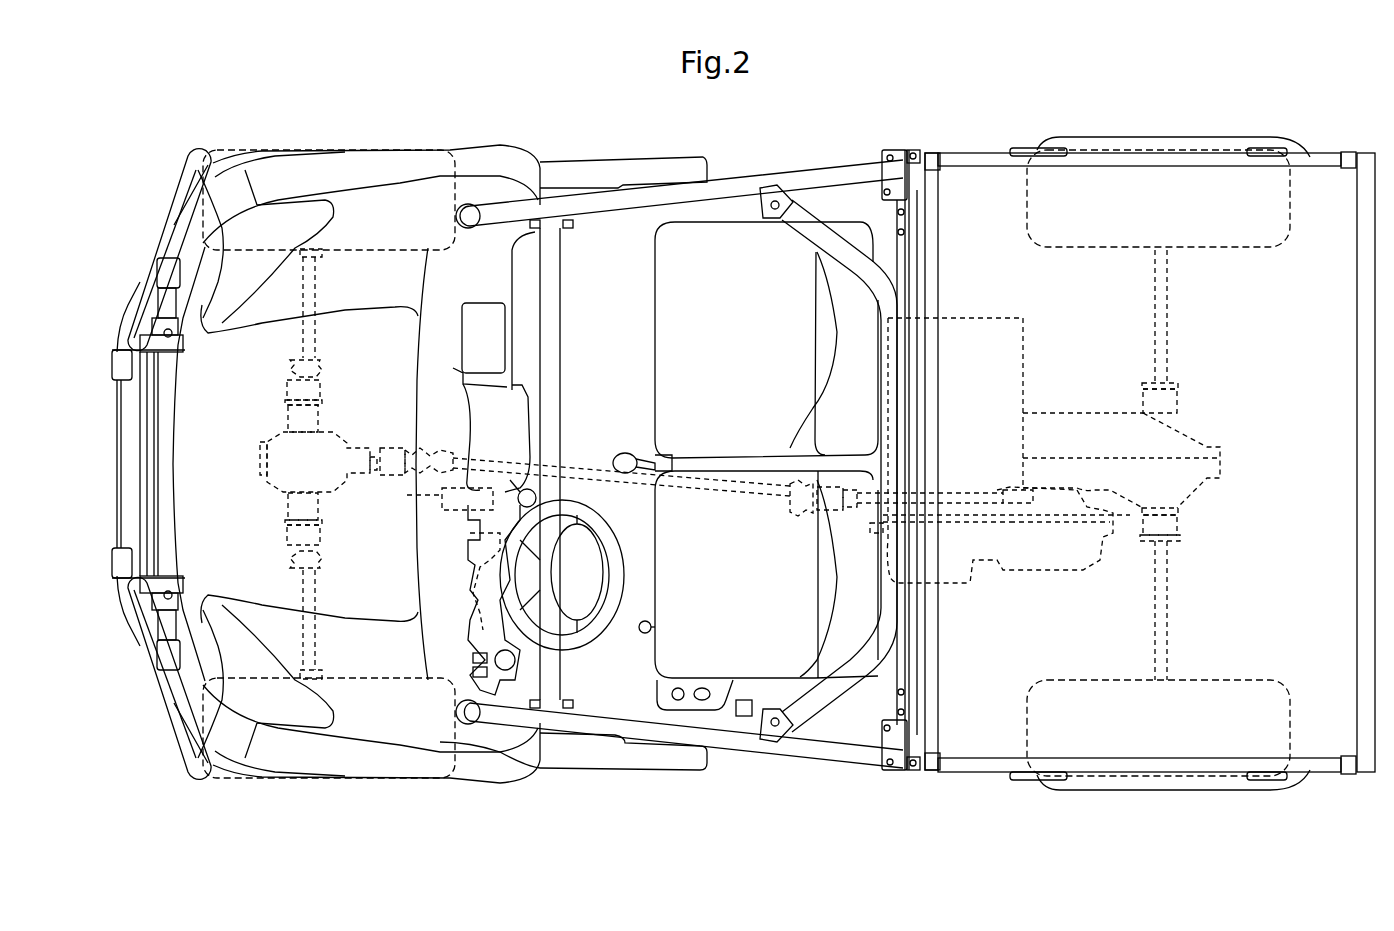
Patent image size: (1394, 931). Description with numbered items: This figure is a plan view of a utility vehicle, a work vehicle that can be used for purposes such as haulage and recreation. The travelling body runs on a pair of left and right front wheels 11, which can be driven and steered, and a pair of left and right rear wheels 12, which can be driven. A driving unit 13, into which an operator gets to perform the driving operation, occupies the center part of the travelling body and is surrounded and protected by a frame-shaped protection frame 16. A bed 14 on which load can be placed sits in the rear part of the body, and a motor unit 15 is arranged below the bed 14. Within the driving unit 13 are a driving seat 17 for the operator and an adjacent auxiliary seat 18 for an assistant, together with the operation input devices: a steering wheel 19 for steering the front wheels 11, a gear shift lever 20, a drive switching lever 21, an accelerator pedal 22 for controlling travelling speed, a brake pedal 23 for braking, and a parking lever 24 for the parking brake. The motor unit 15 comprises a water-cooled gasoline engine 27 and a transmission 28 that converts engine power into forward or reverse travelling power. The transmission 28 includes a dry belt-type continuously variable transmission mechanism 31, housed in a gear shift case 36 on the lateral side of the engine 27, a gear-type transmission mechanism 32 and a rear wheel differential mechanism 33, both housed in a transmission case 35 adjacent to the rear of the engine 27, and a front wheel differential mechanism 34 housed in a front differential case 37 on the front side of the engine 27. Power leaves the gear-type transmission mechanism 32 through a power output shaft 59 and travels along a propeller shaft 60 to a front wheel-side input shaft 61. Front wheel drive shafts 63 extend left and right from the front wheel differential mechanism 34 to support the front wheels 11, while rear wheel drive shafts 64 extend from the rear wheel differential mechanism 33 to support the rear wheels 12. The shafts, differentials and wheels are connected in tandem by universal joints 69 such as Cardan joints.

The front wheels 11 is at (248, 150).
The rear wheels 12 is at (1143, 150).
The driving unit 13 is at (808, 136).
The bed 14 is at (1310, 187).
The motor unit 15 is at (1017, 262).
The protection frame 16 is at (831, 243).
The driving seat 17 is at (660, 647).
The auxiliary seat 18 is at (660, 360).
The steering wheel 19 is at (617, 572).
The gear shift lever 20 is at (527, 490).
The drive switching lever 21 is at (617, 458).
The accelerator pedal 22 is at (470, 457).
The brake pedal 23 is at (483, 567).
The parking lever 24 is at (747, 717).
The engine 27 is at (970, 317).
The transmission 28 is at (1002, 595).
The belt-type continuously variable transmission mechanism 31 is at (1030, 570).
The gear-type transmission mechanism 32 is at (1121, 447).
The rear wheel differential mechanism 33 is at (1045, 420).
The front wheel differential mechanism 34 is at (262, 460).
The transmission case 35 is at (1121, 447).
The gear shift case 36 is at (1049, 559).
The front differential case 37 is at (283, 443).
The power output shaft 59 is at (967, 493).
The propeller shaft 60 is at (690, 498).
The front wheel-side input shaft 61 is at (373, 480).
The front wheel drive shafts 63 is at (312, 296).
The rear wheel drive shafts 64 is at (1163, 325).
The universal joints 69 is at (313, 413).